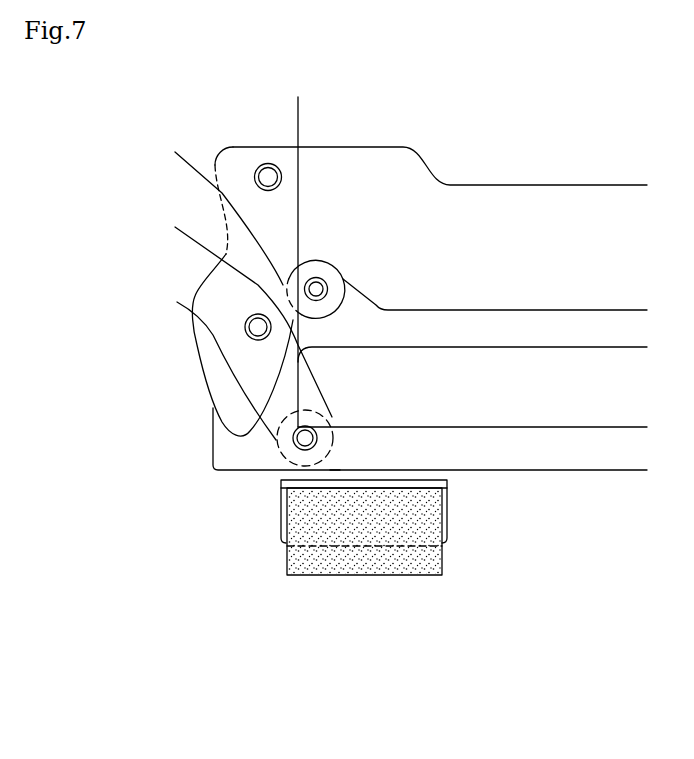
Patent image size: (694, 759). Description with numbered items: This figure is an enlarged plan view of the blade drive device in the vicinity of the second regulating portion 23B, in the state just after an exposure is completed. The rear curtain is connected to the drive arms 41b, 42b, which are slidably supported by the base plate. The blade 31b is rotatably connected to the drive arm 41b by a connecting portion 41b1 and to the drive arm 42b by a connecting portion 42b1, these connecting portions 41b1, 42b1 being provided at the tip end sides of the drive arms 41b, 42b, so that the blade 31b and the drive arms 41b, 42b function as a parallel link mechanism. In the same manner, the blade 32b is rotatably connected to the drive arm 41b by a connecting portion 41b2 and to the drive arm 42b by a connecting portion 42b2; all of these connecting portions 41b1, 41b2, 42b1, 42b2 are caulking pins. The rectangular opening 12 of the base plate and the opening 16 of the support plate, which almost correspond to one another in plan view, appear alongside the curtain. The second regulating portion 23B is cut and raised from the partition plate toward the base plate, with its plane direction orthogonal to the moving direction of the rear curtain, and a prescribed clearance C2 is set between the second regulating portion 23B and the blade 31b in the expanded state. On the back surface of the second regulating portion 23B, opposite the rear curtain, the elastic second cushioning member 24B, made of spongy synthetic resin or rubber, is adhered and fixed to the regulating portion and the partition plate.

The opening 12 is at (431, 313).
The opening 16 is at (472, 387).
The drive arm 42b is at (203, 154).
The connecting portion 42b2 is at (266, 178).
The connecting portion 42b1 is at (312, 286).
The drive arm 41b is at (215, 293).
The connecting portion 41b2 is at (257, 327).
The connecting portion 41b1 is at (302, 438).
The blade 32b is at (213, 378).
The blade 31b is at (243, 463).
The clearance C2 is at (392, 560).
The second regulating portion 23B is at (332, 485).
The second cushioning member 24B is at (392, 562).